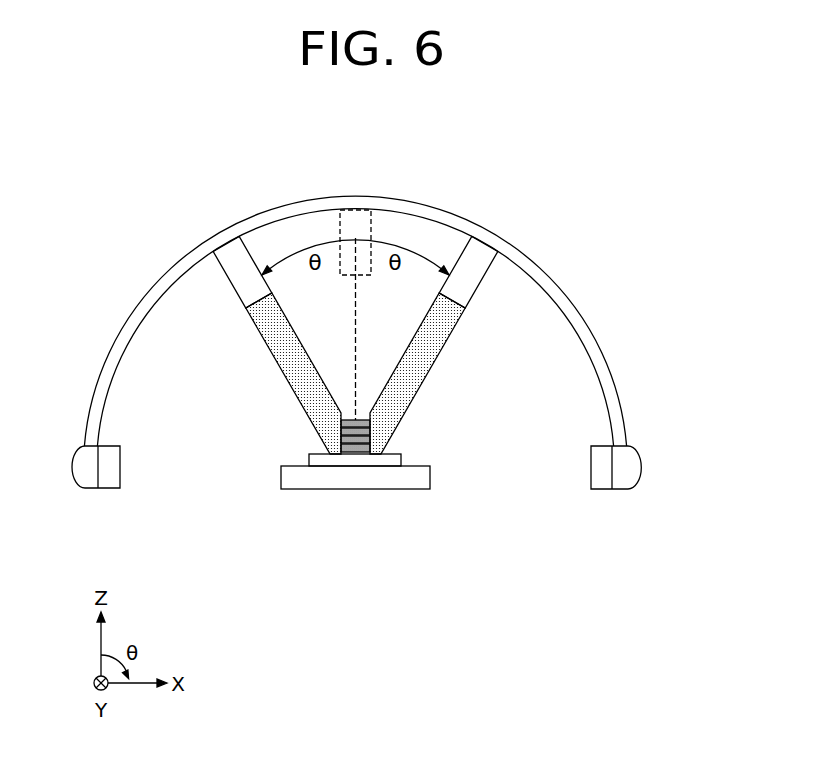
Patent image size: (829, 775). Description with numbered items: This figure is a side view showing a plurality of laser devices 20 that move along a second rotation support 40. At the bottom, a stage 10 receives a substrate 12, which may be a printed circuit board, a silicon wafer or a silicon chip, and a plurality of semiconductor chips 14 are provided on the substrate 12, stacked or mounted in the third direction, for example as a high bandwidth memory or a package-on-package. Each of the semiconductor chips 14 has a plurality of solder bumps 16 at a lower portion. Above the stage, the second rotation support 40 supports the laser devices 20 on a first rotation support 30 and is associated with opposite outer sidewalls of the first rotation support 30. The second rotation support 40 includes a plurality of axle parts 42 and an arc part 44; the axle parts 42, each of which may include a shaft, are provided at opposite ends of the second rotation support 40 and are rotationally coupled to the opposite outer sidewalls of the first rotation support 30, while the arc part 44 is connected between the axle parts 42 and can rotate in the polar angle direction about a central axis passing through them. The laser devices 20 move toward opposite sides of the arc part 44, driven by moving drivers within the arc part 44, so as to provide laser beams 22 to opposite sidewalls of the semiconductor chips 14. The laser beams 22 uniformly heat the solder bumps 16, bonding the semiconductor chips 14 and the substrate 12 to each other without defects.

The stage 10 is at (306, 477).
The substrate 12 is at (385, 462).
The semiconductor chips 14 is at (360, 452).
The solder bumps 16 is at (355, 452).
The laser device 20 is at (236, 267).
The laser beams 22 is at (273, 330).
The first rotation support 30 is at (602, 478).
The second rotation support 40 is at (418, 338).
The axle parts 42 is at (633, 467).
The arc part 44 is at (619, 428).